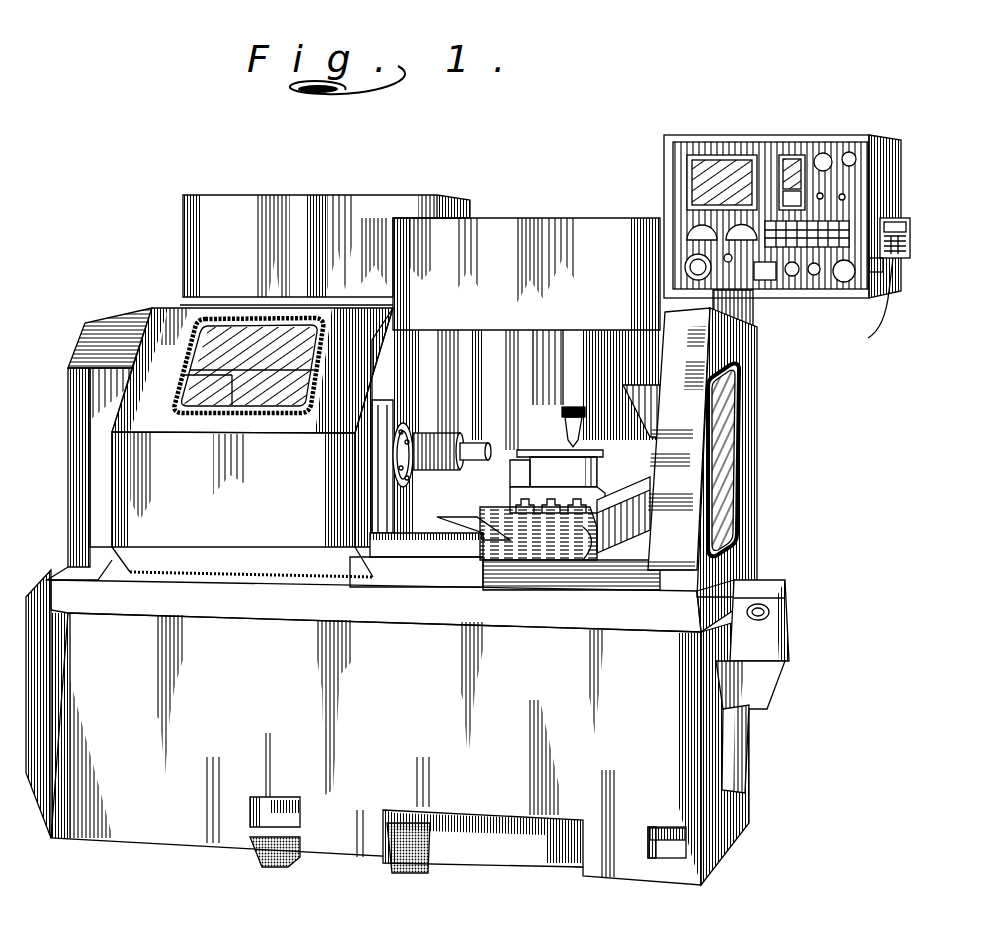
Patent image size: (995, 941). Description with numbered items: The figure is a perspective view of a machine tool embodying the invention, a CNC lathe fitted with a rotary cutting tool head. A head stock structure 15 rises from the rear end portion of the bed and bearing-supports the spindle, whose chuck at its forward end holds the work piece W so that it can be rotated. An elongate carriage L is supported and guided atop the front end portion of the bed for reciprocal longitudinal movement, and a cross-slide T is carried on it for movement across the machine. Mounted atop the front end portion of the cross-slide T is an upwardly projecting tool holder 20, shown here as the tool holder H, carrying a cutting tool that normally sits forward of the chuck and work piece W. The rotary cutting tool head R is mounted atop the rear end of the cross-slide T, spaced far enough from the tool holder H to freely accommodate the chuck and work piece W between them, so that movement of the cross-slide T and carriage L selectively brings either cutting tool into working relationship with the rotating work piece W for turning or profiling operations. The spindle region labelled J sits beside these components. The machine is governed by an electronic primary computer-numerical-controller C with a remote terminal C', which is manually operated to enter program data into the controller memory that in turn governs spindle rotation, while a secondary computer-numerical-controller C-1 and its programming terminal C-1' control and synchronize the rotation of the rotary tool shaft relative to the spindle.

The computer-numerical-controller C is at (220, 416).
The secondary computer-numerical-controller C-1 is at (325, 233).
The remote terminal C' is at (730, 216).
The programming terminal C-1' is at (855, 288).
The rotary cutting tool head R is at (605, 300).
The tool holder H is at (550, 417).
The tool holder 20 is at (547, 447).
The spindle chuck J is at (395, 450).
The head stock structure 15 is at (390, 497).
The cross-slide T is at (672, 452).
The carriage L is at (646, 509).
The work piece W is at (468, 462).